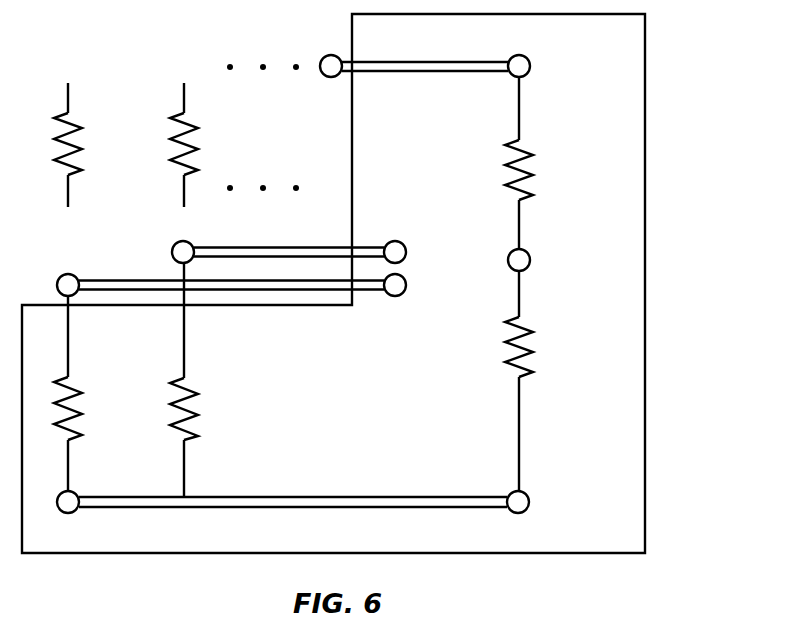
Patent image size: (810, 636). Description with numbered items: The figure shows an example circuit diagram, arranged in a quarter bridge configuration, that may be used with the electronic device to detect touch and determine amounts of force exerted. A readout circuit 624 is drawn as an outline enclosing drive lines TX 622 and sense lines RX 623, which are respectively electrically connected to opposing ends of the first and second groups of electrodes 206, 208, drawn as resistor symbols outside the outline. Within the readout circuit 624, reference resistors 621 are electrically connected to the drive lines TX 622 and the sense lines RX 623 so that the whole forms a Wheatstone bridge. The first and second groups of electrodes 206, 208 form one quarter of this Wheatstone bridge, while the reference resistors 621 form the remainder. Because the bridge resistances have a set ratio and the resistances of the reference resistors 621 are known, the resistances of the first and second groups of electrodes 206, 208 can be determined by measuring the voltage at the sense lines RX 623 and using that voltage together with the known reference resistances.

The first group of electrodes 206 is at (80, 148).
The second group of electrodes 208 is at (196, 148).
The reference resistors 621 is at (531, 175).
The drive lines TX 622 is at (569, 66).
The sense lines RX 623 is at (425, 240).
The readout circuit 624 is at (646, 47).